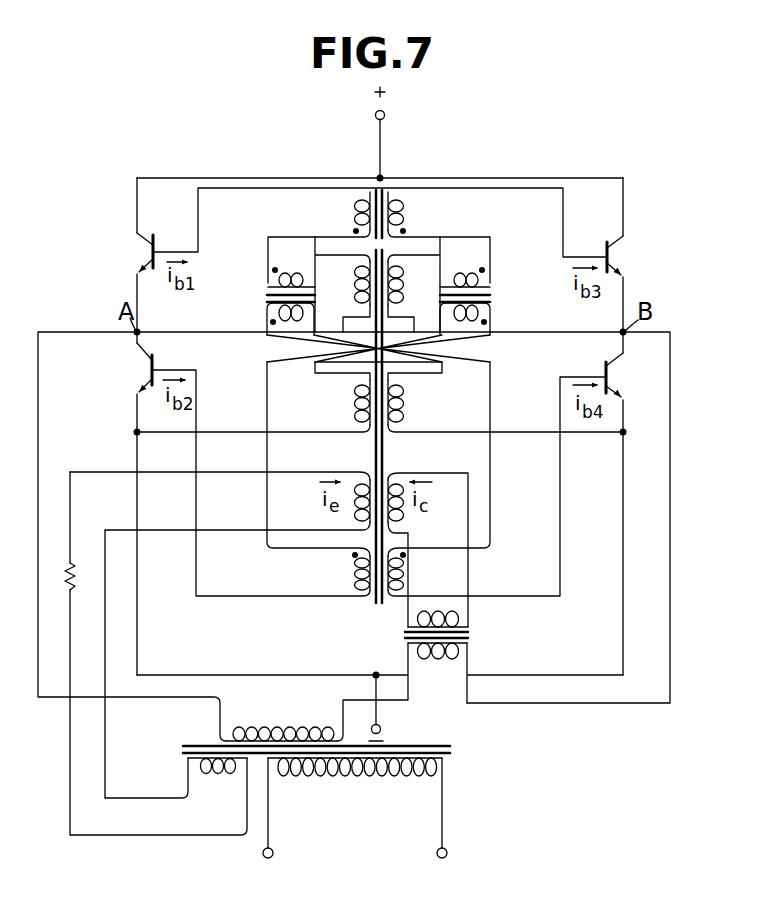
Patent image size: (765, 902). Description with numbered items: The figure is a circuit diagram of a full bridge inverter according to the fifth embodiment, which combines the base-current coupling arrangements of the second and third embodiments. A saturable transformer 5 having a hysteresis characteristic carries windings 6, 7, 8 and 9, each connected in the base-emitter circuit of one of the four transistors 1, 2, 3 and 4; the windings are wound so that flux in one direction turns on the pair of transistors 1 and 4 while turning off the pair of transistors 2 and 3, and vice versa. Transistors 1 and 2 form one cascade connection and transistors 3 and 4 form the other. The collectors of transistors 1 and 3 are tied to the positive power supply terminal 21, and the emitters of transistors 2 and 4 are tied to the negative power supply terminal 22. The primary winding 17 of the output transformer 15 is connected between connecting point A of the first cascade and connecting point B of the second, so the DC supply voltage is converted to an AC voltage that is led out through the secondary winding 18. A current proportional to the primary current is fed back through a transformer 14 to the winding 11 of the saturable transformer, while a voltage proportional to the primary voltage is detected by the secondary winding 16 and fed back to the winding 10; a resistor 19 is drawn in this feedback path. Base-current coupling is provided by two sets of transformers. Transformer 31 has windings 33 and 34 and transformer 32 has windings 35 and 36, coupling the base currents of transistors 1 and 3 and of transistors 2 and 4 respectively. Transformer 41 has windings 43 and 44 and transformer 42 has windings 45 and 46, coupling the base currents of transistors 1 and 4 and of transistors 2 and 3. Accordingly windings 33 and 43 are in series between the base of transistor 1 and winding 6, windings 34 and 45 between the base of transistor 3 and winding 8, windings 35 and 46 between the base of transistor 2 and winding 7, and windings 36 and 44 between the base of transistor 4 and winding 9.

The transistor 1 is at (148, 251).
The transistor 2 is at (147, 372).
The transistor 3 is at (617, 262).
The transistor 4 is at (617, 378).
The saturable transformer 5 is at (386, 247).
The winding 6 is at (356, 284).
The winding 7 is at (356, 408).
The winding 8 is at (401, 284).
The winding 9 is at (401, 408).
The winding 10 is at (352, 486).
The winding 11 is at (402, 486).
The transformer 14 is at (470, 635).
The output transformer 15 is at (452, 750).
The secondary winding 16 is at (212, 776).
The primary winding 17 is at (268, 724).
The secondary winding 18 is at (345, 778).
The resistor 19 is at (78, 575).
The positive power supply terminal 21 is at (386, 112).
The negative power supply terminal 22 is at (385, 724).
The transformer 31 is at (384, 186).
The transformer 32 is at (379, 604).
The winding 33 is at (358, 214).
The winding 34 is at (403, 217).
The winding 35 is at (356, 576).
The winding 36 is at (404, 576).
The transformer 41 is at (266, 297).
The transformer 42 is at (492, 300).
The winding 43 is at (292, 279).
The winding 44 is at (288, 320).
The winding 45 is at (470, 281).
The winding 46 is at (468, 320).